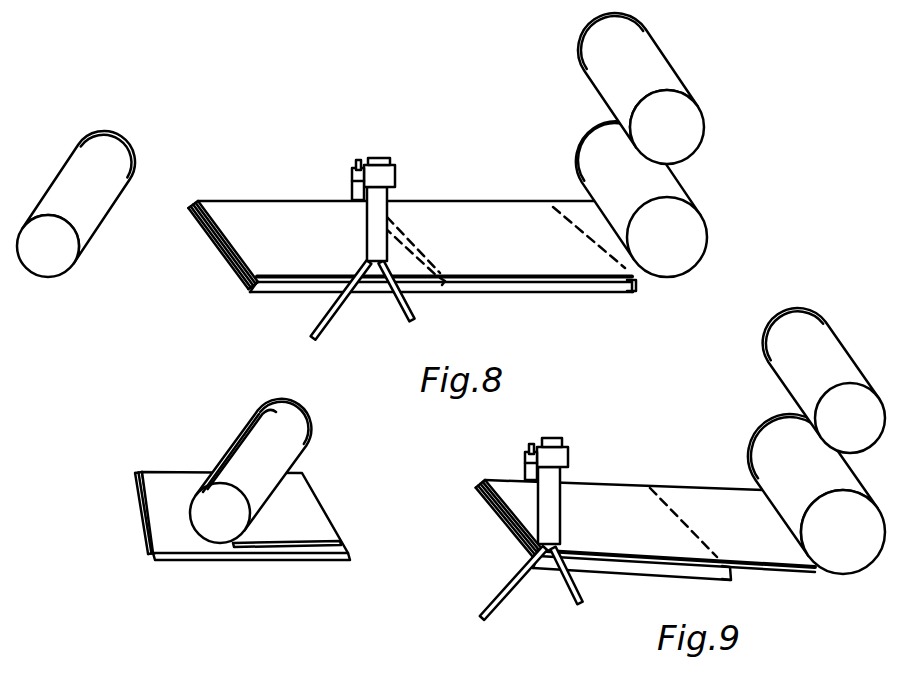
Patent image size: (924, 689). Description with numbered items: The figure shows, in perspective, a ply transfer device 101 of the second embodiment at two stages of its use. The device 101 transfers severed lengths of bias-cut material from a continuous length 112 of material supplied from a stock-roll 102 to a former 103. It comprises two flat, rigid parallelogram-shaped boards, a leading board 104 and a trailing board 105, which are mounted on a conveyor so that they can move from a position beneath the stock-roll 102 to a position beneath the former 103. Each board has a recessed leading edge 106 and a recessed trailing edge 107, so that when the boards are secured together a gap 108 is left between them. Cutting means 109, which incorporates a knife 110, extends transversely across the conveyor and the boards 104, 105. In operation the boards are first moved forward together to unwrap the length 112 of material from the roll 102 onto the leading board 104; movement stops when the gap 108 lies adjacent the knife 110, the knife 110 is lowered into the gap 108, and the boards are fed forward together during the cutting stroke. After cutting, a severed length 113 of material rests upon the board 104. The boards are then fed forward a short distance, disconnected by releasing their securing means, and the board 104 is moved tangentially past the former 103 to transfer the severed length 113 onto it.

In FIG. 8, the ply transfer device 101 is at (528, 299).
In FIG. 9, the ply transfer device 101 is at (650, 523).
In FIG. 8, the stock-roll 102 is at (693, 229).
In FIG. 9, the stock-roll 102 is at (866, 552).
In FIG. 8, the former 103 is at (107, 184).
In FIG. 9, the former 103 is at (300, 429).
In FIG. 8, the leading board 104 is at (298, 289).
In FIG. 9, the leading board 104 is at (203, 556).
In FIG. 8, the trailing board 105 is at (490, 294).
In FIG. 9, the trailing board 105 is at (598, 569).
In FIG. 8, the recessed leading edge 106 is at (218, 248).
In FIG. 9, the recessed leading edge 106 is at (483, 510).
In FIG. 8, the recessed trailing edge 107 is at (637, 286).
In FIG. 9, the recessed trailing edge 107 is at (731, 575).
In FIG. 8, the gap 108 is at (443, 285).
In FIG. 8, the cutting means 109 is at (399, 172).
In FIG. 9, the cutting means 109 is at (575, 454).
In FIG. 8, the knife 110 is at (352, 189).
In FIG. 9, the knife 110 is at (526, 472).
In FIG. 8, the continuous length of material 112 is at (550, 208).
In FIG. 9, the severed length of material 113 is at (270, 415).